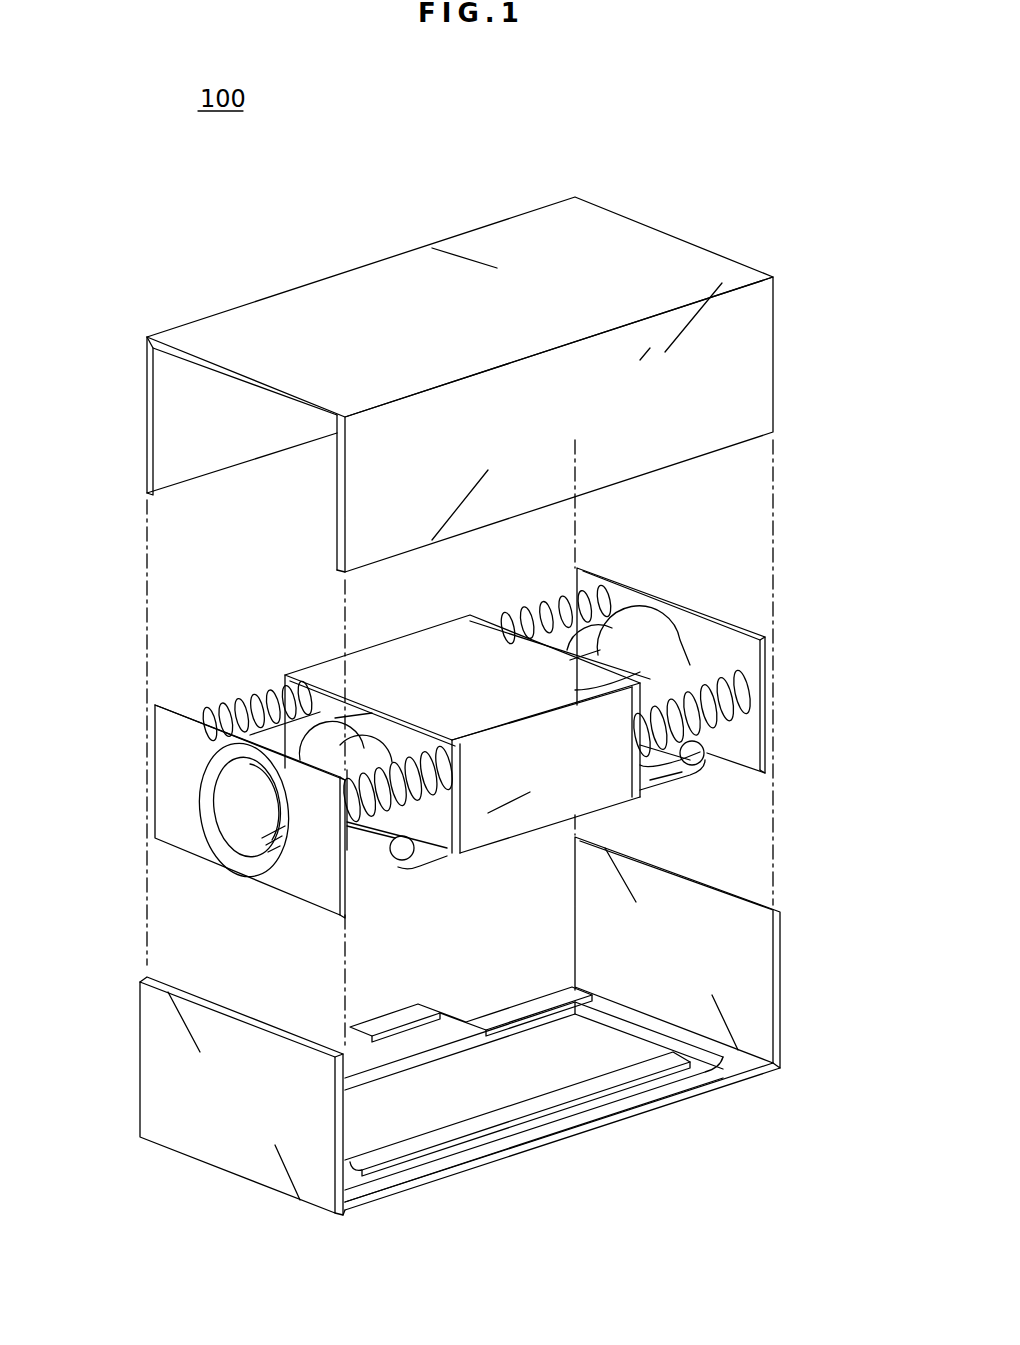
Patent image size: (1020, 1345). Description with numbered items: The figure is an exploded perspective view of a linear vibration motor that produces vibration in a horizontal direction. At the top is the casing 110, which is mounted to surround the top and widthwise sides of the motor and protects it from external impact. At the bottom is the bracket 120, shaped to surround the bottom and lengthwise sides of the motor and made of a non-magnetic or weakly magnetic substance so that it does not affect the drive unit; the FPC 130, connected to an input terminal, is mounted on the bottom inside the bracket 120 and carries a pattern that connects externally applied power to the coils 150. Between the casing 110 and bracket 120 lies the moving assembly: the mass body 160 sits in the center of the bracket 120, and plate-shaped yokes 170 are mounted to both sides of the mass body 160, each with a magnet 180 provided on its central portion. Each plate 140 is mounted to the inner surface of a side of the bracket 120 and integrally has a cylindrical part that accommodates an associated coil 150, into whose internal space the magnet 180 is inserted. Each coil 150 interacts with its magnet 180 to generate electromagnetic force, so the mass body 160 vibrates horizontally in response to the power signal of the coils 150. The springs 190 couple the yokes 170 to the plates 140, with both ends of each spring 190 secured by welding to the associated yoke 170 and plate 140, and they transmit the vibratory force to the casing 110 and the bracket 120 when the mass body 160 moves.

The casing 110 is at (643, 243).
The bracket 120 is at (757, 988).
The FPC 130 is at (527, 1112).
The plate 140 is at (667, 627).
The coil 150 is at (230, 800).
The mass body 160 is at (432, 643).
The yoke 170 is at (288, 683).
The magnet 180 is at (360, 738).
The spring 190 is at (540, 606).